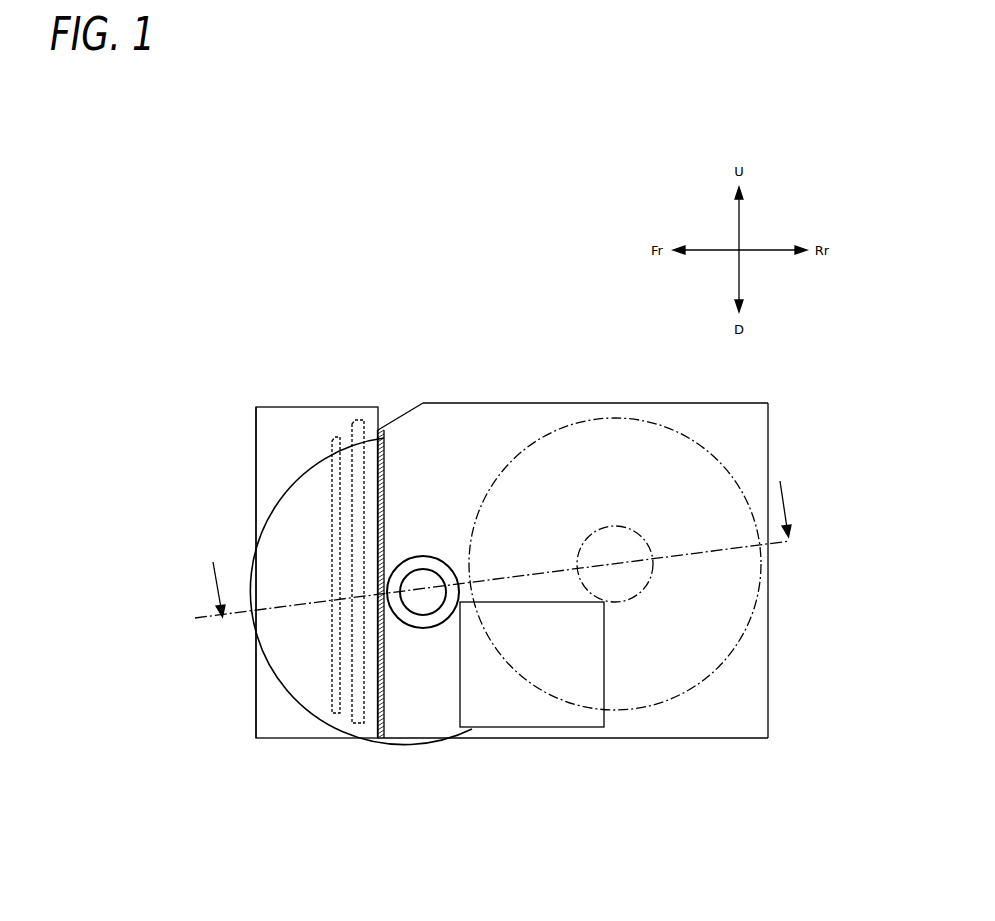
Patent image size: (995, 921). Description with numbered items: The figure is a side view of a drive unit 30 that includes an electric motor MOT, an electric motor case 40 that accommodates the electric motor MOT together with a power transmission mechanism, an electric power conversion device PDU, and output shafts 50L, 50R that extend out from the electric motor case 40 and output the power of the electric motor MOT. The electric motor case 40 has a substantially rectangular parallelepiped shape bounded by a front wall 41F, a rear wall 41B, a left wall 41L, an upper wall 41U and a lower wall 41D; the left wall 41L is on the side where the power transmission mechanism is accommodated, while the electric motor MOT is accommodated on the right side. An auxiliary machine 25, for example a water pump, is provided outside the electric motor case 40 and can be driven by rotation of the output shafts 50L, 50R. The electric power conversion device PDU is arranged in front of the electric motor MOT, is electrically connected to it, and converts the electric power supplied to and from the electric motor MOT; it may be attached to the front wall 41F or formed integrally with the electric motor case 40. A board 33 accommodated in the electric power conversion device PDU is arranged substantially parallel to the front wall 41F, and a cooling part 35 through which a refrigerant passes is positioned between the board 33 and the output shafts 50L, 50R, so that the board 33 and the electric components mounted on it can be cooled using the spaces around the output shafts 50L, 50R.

The drive unit 30 is at (506, 350).
The electric motor case 40 is at (777, 632).
The upper wall 41U is at (572, 403).
The rear wall 41B is at (768, 577).
The lower wall 41D is at (654, 740).
The left wall 41L is at (293, 658).
The front wall 41F is at (378, 723).
The electric power conversion device PDU is at (304, 422).
The board 33 is at (341, 433).
The cooling part 35 is at (355, 736).
The output shaft 50L is at (430, 628).
The output shaft 50R is at (438, 685).
The auxiliary machine 25 is at (555, 730).
The electric motor MOT is at (723, 470).